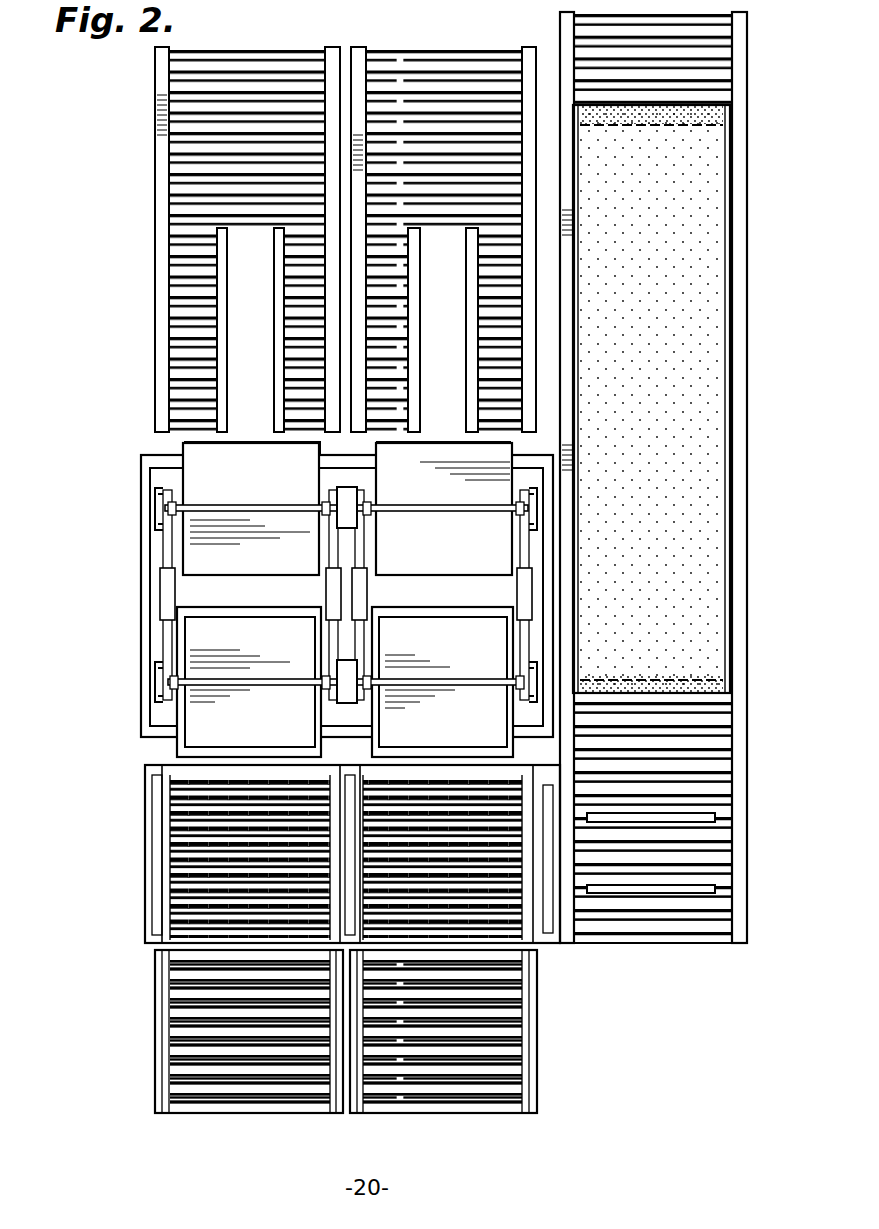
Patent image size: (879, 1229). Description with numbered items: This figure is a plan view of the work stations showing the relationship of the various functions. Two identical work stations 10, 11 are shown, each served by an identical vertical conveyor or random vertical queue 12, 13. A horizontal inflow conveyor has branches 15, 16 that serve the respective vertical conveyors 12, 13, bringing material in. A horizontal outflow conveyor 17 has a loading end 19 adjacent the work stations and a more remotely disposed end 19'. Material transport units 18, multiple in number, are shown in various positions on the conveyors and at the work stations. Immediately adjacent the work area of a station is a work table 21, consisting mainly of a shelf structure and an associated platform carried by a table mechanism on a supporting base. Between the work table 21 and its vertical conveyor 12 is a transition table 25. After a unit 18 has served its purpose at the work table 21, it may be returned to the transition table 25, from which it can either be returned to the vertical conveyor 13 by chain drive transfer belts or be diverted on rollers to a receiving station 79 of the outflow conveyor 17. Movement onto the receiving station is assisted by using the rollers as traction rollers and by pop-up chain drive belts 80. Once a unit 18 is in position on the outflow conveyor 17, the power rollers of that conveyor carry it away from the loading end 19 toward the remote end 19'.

The work station 10 is at (329, 891).
The work station 11 is at (560, 1039).
The vertical conveyor 12 is at (293, 591).
The vertical conveyor 13 is at (568, 541).
The inflow conveyor branch 15 is at (185, 127).
The inflow conveyor branch 16 is at (453, 100).
The horizontal outflow conveyor 17 is at (680, 378).
The material transport unit 18 is at (210, 646).
The loading end 19 is at (684, 837).
The remote end 19' is at (685, 69).
The work table 21 is at (398, 1055).
The transition table 25 is at (165, 808).
The receiving station 79 is at (720, 912).
The pop-up chain drive belts 80 is at (703, 882).